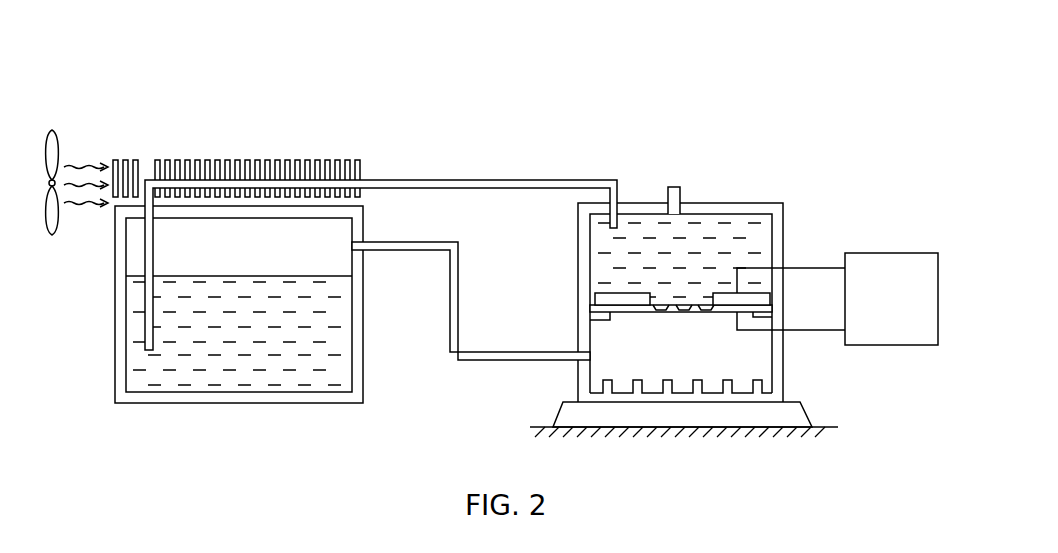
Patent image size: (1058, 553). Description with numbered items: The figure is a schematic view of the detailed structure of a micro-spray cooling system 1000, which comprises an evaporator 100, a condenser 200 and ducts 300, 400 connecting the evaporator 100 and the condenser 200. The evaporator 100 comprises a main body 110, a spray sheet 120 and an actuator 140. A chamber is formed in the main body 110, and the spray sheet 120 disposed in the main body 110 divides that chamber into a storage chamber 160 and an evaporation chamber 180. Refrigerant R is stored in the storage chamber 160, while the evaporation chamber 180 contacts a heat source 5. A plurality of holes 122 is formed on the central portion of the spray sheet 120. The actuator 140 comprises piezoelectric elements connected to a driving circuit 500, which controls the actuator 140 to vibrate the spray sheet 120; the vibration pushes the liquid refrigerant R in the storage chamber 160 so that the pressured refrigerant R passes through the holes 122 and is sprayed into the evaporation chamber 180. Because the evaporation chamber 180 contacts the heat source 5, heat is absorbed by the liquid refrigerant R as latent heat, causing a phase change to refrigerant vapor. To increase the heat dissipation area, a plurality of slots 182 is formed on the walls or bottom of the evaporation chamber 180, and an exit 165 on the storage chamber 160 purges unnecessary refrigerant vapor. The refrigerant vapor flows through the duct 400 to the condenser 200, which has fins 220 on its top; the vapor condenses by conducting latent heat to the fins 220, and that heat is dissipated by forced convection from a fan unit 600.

The micro-spray cooling system 1000 is at (69, 68).
The fan unit 600 is at (53, 142).
The fins 220 is at (268, 160).
The condenser 200 is at (253, 418).
The duct 300 is at (512, 180).
The duct 400 is at (467, 361).
The evaporator 100 is at (691, 299).
The main body 110 is at (768, 207).
The storage chamber 160 is at (765, 243).
The exit 165 is at (677, 186).
The refrigerant R is at (607, 260).
The actuator 140 is at (762, 299).
The spray sheet 120 is at (768, 309).
The holes 122 is at (707, 309).
The evaporation chamber 180 is at (760, 374).
The slots 182 is at (743, 388).
The heat source 5 is at (798, 412).
The driving circuit 500 is at (888, 251).